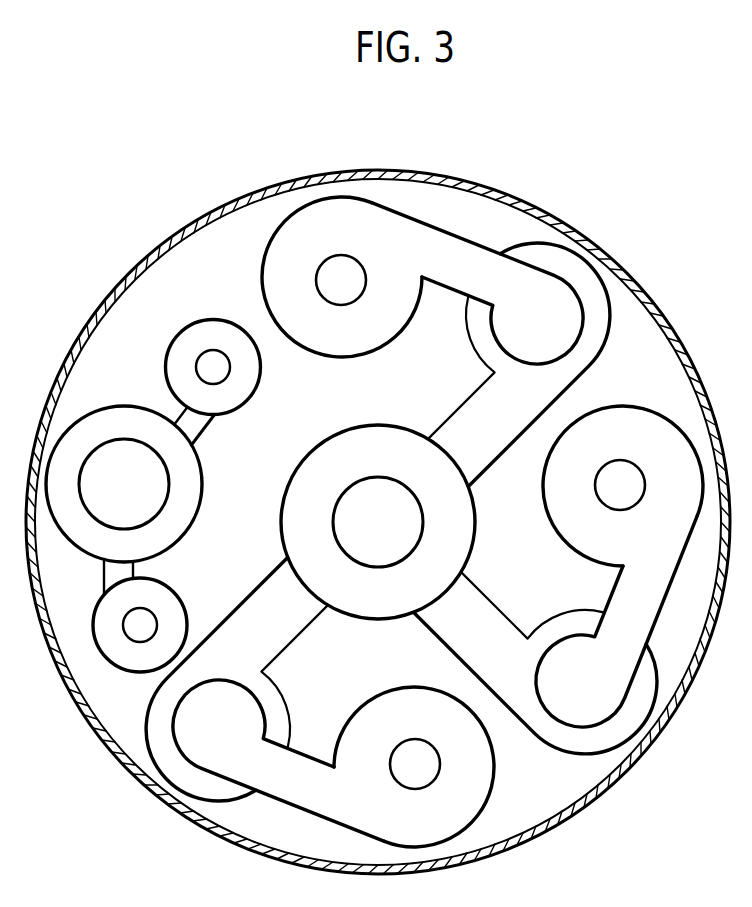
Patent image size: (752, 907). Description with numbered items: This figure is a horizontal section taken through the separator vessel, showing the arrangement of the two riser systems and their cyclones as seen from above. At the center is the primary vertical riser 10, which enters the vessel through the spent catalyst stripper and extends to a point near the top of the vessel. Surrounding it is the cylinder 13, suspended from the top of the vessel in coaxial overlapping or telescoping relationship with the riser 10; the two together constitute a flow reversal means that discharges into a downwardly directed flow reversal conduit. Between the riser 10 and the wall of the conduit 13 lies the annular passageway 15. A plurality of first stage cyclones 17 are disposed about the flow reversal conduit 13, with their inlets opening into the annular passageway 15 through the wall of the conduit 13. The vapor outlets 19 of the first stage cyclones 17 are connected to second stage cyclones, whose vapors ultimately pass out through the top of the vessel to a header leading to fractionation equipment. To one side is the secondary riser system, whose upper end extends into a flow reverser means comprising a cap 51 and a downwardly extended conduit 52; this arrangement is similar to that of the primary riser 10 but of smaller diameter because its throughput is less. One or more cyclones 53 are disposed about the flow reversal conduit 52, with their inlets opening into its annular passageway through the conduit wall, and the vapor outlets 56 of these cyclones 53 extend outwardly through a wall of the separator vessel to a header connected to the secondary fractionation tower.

The primary vertical riser 10 is at (415, 498).
The cylinder 13 is at (405, 425).
The annular passageway 15 is at (462, 525).
The first stage cyclones 17 is at (600, 346).
The vapor outlets 19 is at (453, 277).
The cap 51 is at (117, 447).
The downwardly extended conduit 52 is at (203, 497).
The cyclones 53 is at (220, 327).
The vapor outlets 56 is at (210, 360).